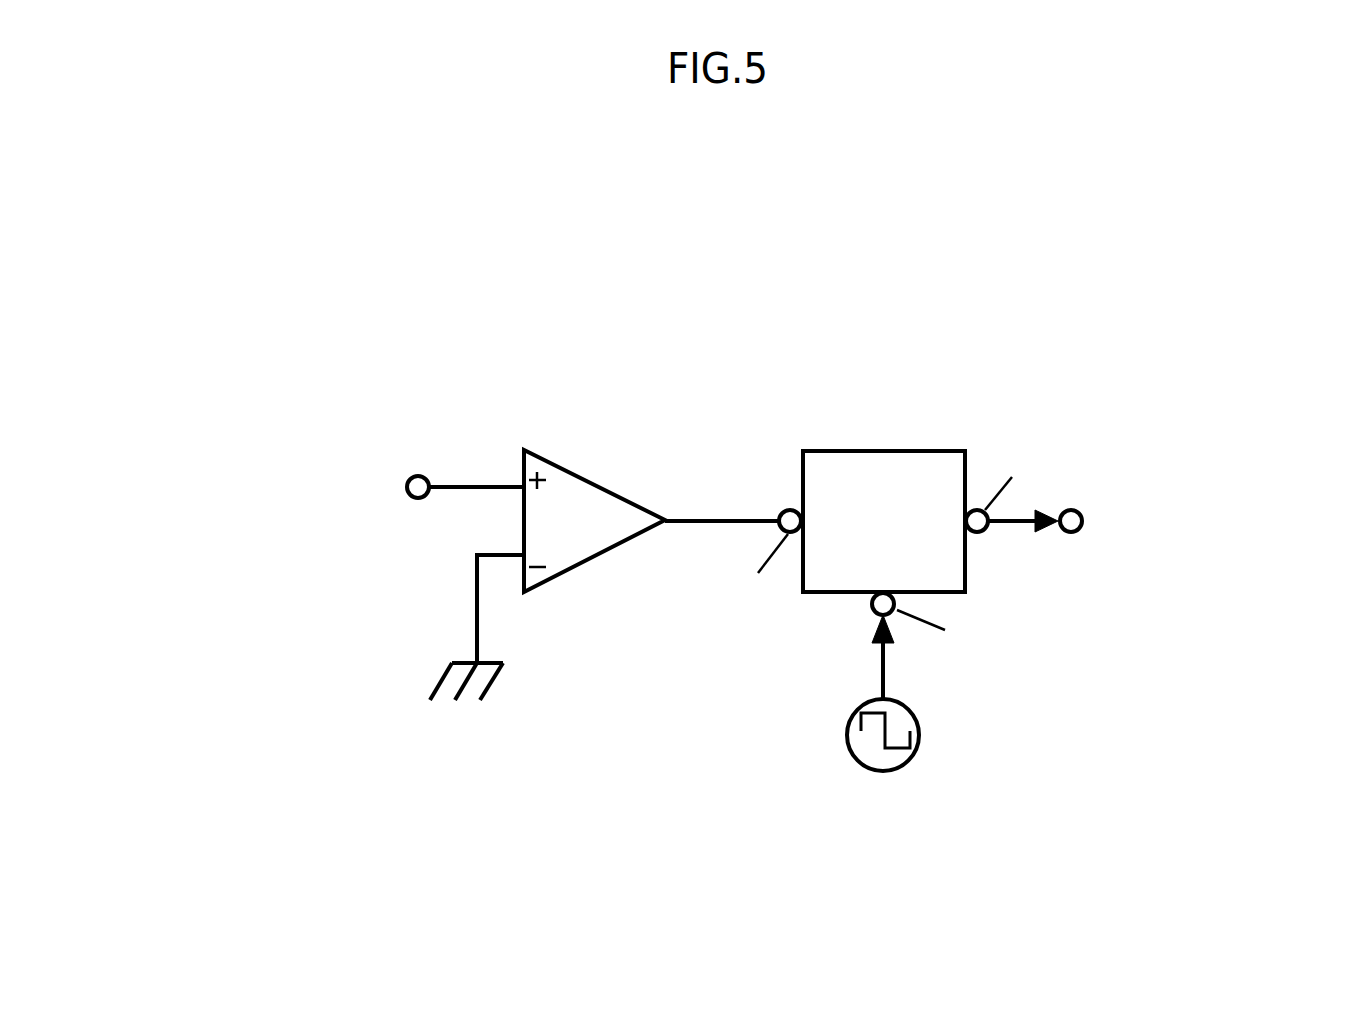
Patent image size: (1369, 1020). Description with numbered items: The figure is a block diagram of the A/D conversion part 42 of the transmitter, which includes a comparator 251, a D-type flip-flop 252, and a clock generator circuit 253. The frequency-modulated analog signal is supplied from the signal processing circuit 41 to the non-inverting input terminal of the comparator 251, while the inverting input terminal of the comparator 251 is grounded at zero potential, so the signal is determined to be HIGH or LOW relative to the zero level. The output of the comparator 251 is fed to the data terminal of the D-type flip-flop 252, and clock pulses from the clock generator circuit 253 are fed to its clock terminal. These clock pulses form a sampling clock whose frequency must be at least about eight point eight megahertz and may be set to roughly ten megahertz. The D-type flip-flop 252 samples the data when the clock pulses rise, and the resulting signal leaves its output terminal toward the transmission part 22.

The A/D conversion part 42 is at (467, 278).
The comparator 251 is at (572, 472).
The D-type flip-flop 252 is at (862, 448).
The clock generator circuit 253 is at (860, 760).
The signal processing circuit 41 is at (232, 469).
The transmission part 22 is at (1201, 524).